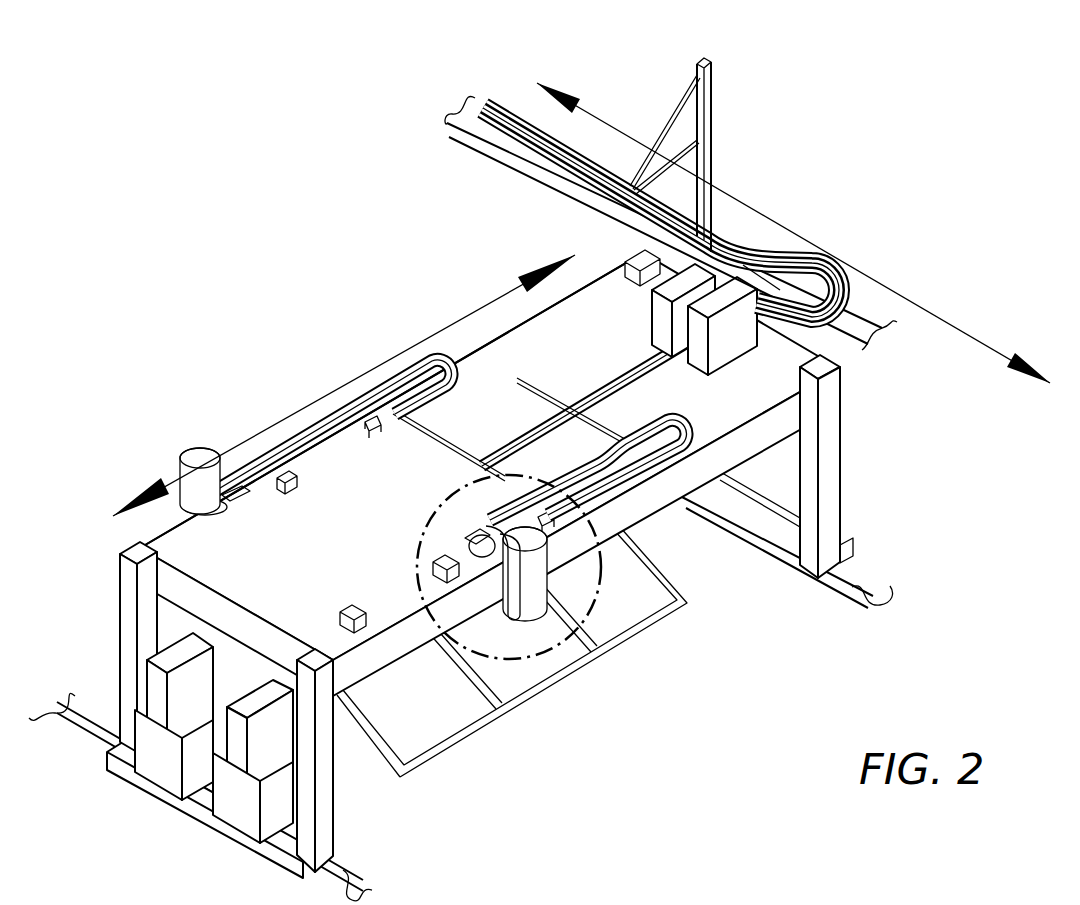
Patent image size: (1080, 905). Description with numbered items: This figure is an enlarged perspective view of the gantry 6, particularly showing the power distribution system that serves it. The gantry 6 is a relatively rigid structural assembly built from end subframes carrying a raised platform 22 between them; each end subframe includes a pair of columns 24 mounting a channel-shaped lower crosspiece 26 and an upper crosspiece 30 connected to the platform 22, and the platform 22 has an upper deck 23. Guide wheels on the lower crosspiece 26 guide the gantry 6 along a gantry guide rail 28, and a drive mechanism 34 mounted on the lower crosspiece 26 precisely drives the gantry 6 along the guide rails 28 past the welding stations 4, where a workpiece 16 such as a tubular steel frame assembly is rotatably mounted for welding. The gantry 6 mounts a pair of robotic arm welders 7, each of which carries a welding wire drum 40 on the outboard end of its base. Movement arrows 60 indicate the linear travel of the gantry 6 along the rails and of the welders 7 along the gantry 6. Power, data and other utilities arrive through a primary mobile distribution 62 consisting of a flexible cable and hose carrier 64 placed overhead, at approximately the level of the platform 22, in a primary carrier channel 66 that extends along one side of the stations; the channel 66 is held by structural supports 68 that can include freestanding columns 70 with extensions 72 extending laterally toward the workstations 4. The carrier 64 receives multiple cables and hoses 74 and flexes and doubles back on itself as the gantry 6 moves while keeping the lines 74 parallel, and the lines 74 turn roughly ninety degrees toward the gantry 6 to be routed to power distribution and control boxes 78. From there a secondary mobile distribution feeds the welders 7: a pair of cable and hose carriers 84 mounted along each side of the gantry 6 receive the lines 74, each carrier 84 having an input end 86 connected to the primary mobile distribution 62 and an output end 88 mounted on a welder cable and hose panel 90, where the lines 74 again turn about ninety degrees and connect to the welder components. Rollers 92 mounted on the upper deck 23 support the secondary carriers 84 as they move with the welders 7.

The welding station 4 is at (430, 601).
The gantry 6 is at (288, 312).
The robotic arm welder 7 is at (176, 462).
The workpiece 16 is at (690, 607).
The raised platform 22 is at (490, 456).
The upper deck 23 is at (391, 400).
The column 24 is at (120, 596).
The lower crosspiece 26 is at (148, 790).
The gantry guide rail 28 is at (345, 868).
The upper crosspiece 30 is at (490, 532).
The drive mechanism 34 is at (214, 738).
The welding wire drum 40 is at (198, 454).
The movement arrow 60 is at (602, 121).
The primary mobile distribution 62 is at (585, 213).
The cable and hose carrier 64 is at (838, 292).
The primary carrier channel 66 is at (520, 165).
The structural support 68 is at (712, 90).
The freestanding column 70 is at (712, 125).
The extension 72 is at (681, 96).
The cables and hoses 74 is at (640, 372).
The power distribution and control box 78 is at (686, 308).
The secondary cable and hose carrier 84 is at (448, 370).
The input end 86 is at (372, 424).
The output end 88 is at (228, 505).
The welder cable and hose panel 90 is at (213, 512).
The roller 92 is at (291, 479).